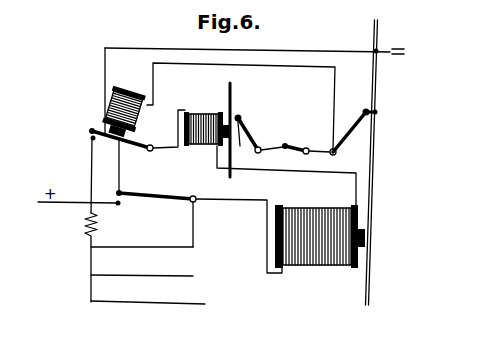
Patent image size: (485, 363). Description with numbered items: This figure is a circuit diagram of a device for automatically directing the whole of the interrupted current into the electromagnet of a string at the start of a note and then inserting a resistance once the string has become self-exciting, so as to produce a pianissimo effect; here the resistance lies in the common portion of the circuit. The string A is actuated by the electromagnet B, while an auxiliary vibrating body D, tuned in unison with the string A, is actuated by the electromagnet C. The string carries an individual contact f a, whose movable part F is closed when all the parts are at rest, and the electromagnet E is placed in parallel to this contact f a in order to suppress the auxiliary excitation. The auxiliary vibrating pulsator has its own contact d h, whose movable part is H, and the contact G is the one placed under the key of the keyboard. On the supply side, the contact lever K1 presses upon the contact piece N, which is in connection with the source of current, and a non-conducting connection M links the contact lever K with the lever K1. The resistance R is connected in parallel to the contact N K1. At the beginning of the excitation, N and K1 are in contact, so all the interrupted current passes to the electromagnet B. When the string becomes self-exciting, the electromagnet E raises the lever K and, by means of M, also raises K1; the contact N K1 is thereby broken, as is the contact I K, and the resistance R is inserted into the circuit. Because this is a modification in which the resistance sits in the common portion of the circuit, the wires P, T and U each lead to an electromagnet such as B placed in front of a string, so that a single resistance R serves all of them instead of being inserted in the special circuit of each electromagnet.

The string A is at (377, 146).
The electromagnet E is at (133, 95).
The contact lever K is at (92, 130).
The contact I is at (92, 139).
The non-conducting connection M is at (120, 160).
The contact lever K1 is at (121, 193).
The contact piece N is at (120, 204).
The resistance R is at (85, 226).
The wire U is at (160, 243).
The wire P is at (139, 276).
The wire T is at (136, 304).
The electromagnet C is at (202, 113).
The auxiliary vibrating body D is at (232, 92).
The contact d is at (237, 118).
The contact h is at (240, 142).
The movable part of contact H is at (252, 128).
The contact G is at (295, 147).
The movable part of contact F is at (356, 136).
The contact f is at (364, 110).
The contact a is at (377, 111).
The electromagnet B is at (313, 272).